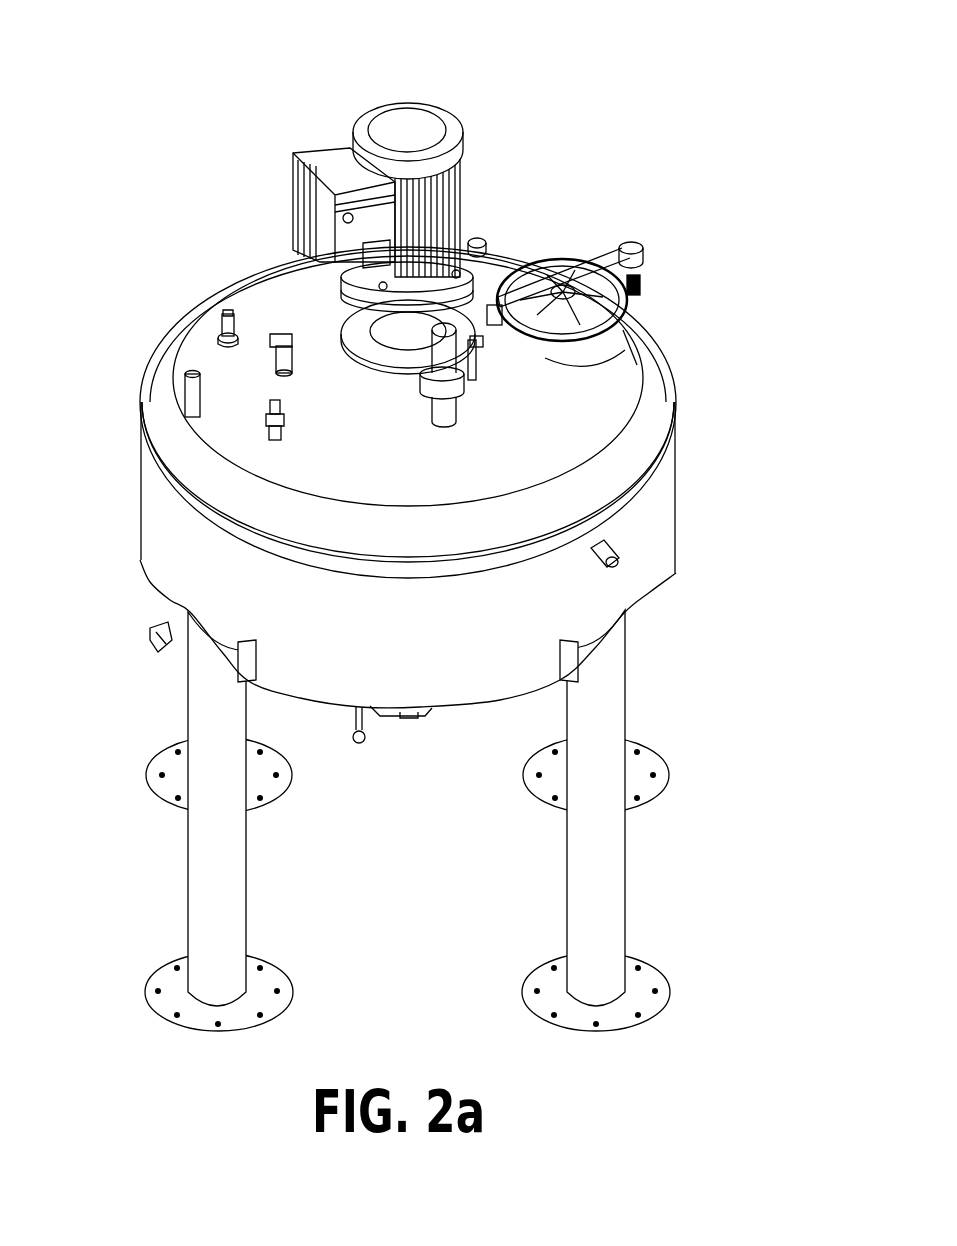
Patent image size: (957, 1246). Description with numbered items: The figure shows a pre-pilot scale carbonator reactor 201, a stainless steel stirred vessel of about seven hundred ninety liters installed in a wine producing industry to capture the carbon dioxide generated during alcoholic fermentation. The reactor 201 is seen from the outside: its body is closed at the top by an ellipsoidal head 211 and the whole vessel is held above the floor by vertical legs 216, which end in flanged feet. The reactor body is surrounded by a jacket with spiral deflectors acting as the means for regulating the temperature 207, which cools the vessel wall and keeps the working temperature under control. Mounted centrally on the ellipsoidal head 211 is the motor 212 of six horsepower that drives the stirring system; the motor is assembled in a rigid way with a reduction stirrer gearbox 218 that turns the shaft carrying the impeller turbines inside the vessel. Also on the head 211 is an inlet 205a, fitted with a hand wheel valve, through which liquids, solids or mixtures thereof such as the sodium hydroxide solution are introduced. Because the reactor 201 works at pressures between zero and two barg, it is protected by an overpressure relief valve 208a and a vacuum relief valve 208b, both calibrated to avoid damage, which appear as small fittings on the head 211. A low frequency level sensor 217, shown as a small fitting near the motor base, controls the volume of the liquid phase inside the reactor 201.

The carbonator reactor 201 is at (410, 525).
The inlet 205a is at (595, 312).
The means for regulating the temperature 207 is at (603, 520).
The overpressure relief valve 208a is at (273, 413).
The vacuum relief valve 208b is at (227, 318).
The ellipsoidal head 211 is at (268, 300).
The motor 212 is at (358, 133).
The vertical legs 216 is at (598, 893).
The low frequency level sensor 217 is at (487, 240).
The stirrer gearbox 218 is at (633, 246).